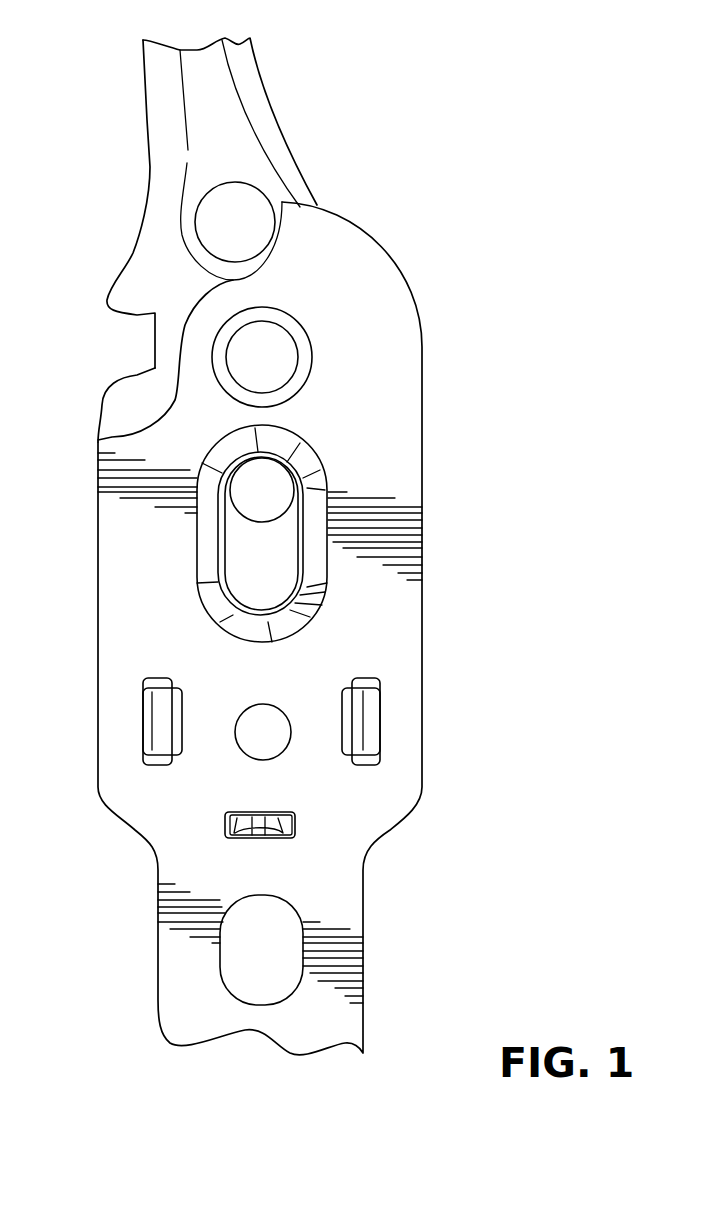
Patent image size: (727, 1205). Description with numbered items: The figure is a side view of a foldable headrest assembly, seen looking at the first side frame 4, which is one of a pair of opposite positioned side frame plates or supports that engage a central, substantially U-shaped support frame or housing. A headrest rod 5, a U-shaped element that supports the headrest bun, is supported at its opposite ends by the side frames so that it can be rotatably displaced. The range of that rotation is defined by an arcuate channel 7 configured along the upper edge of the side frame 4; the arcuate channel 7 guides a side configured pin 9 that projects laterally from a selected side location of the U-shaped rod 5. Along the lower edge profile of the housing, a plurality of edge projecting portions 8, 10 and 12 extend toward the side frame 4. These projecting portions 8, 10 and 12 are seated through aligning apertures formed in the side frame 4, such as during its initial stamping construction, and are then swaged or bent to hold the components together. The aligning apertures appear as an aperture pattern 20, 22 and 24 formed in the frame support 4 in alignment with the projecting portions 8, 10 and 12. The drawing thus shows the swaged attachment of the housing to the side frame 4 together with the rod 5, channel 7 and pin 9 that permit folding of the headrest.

The first side frame 4 is at (163, 835).
The headrest rod 5 is at (163, 128).
The arcuate channel 7 is at (190, 317).
The projecting portion 8 is at (155, 713).
The side configured pin 9 is at (242, 203).
The projecting portion 10 is at (372, 722).
The projecting portion 12 is at (257, 820).
The aperture 20 is at (143, 757).
The aperture 22 is at (380, 755).
The aperture 24 is at (293, 837).